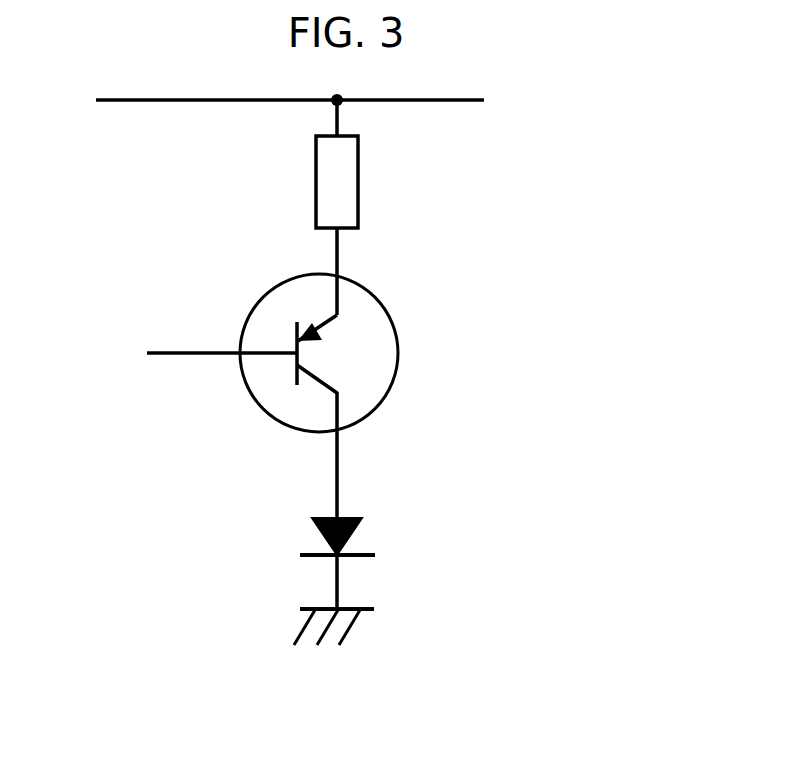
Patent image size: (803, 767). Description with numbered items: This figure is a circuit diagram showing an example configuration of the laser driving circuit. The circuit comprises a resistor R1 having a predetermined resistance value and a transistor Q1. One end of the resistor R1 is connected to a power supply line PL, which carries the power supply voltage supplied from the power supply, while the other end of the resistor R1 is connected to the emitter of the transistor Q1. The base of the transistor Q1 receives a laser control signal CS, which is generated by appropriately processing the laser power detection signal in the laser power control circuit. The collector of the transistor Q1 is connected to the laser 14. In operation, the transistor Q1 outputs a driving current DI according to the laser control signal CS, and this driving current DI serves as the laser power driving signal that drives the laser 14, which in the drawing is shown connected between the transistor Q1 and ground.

The power supply line PL is at (122, 101).
The resistor R1 is at (360, 157).
The transistor Q1 is at (387, 308).
The laser control signal CS is at (177, 351).
The driving current DI is at (338, 466).
The laser 14 is at (355, 535).